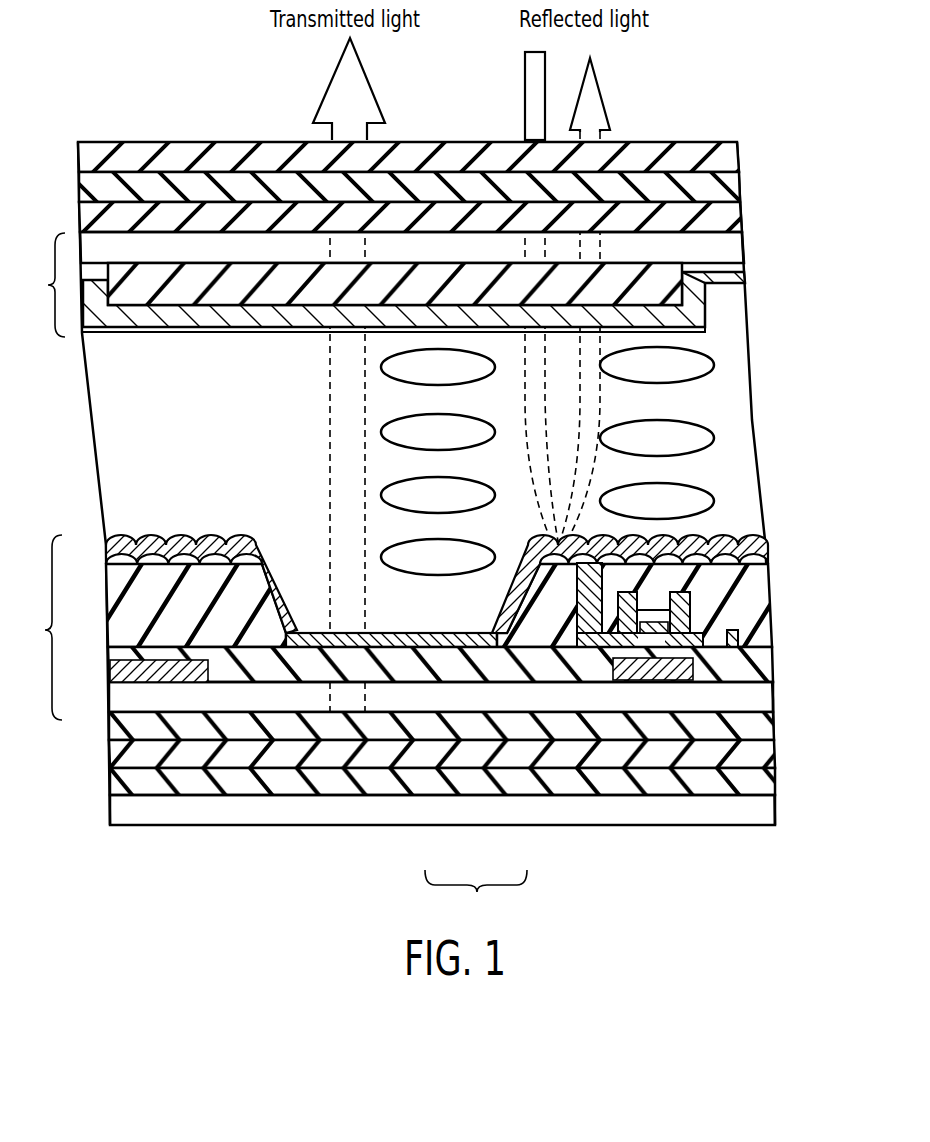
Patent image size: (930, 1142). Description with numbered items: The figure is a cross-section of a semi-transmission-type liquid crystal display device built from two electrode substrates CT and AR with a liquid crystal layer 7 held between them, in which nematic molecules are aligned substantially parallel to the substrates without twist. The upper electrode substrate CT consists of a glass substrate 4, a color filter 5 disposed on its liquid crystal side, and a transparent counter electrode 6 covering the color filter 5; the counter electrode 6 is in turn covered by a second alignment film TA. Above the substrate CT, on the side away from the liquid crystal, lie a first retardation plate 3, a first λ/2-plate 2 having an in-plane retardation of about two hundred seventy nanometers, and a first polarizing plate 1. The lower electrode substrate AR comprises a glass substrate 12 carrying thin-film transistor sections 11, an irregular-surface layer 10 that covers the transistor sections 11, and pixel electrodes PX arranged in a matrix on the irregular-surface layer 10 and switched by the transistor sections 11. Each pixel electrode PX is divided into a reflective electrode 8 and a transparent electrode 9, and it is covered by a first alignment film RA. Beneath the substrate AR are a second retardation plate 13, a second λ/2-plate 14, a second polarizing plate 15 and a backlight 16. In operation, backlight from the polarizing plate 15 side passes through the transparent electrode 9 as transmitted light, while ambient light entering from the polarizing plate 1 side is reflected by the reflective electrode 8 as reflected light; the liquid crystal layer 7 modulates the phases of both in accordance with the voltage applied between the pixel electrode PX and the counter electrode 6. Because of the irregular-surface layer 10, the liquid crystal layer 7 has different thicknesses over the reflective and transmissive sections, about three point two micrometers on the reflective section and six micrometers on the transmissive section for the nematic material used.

The first polarizing plate 1 is at (255, 142).
The first λ/2 wavelength plate 2 is at (727, 188).
The first retardation plate 3 is at (727, 222).
The glass substrate 4 is at (182, 247).
The color filter 5 is at (635, 268).
The transparent counter electrode 6 is at (727, 310).
The liquid crystal layer 7 is at (727, 400).
The reflective electrode 8 is at (560, 556).
The transparent electrode 9 is at (410, 648).
The irregular-surface layer 10 is at (122, 611).
The thin-film transistor section 11 is at (747, 612).
The glass substrate 12 is at (125, 703).
The second retardation plate 13 is at (765, 722).
The second λ/2 wavelength plate 14 is at (765, 755).
The second polarizing plate 15 is at (765, 787).
The backlight 16 is at (765, 808).
The first electrode substrate CT is at (39, 285).
The second alignment film TA is at (120, 330).
The first alignment film RA is at (120, 543).
The second electrode substrate AR is at (38, 627).
The pixel electrode PX is at (476, 897).